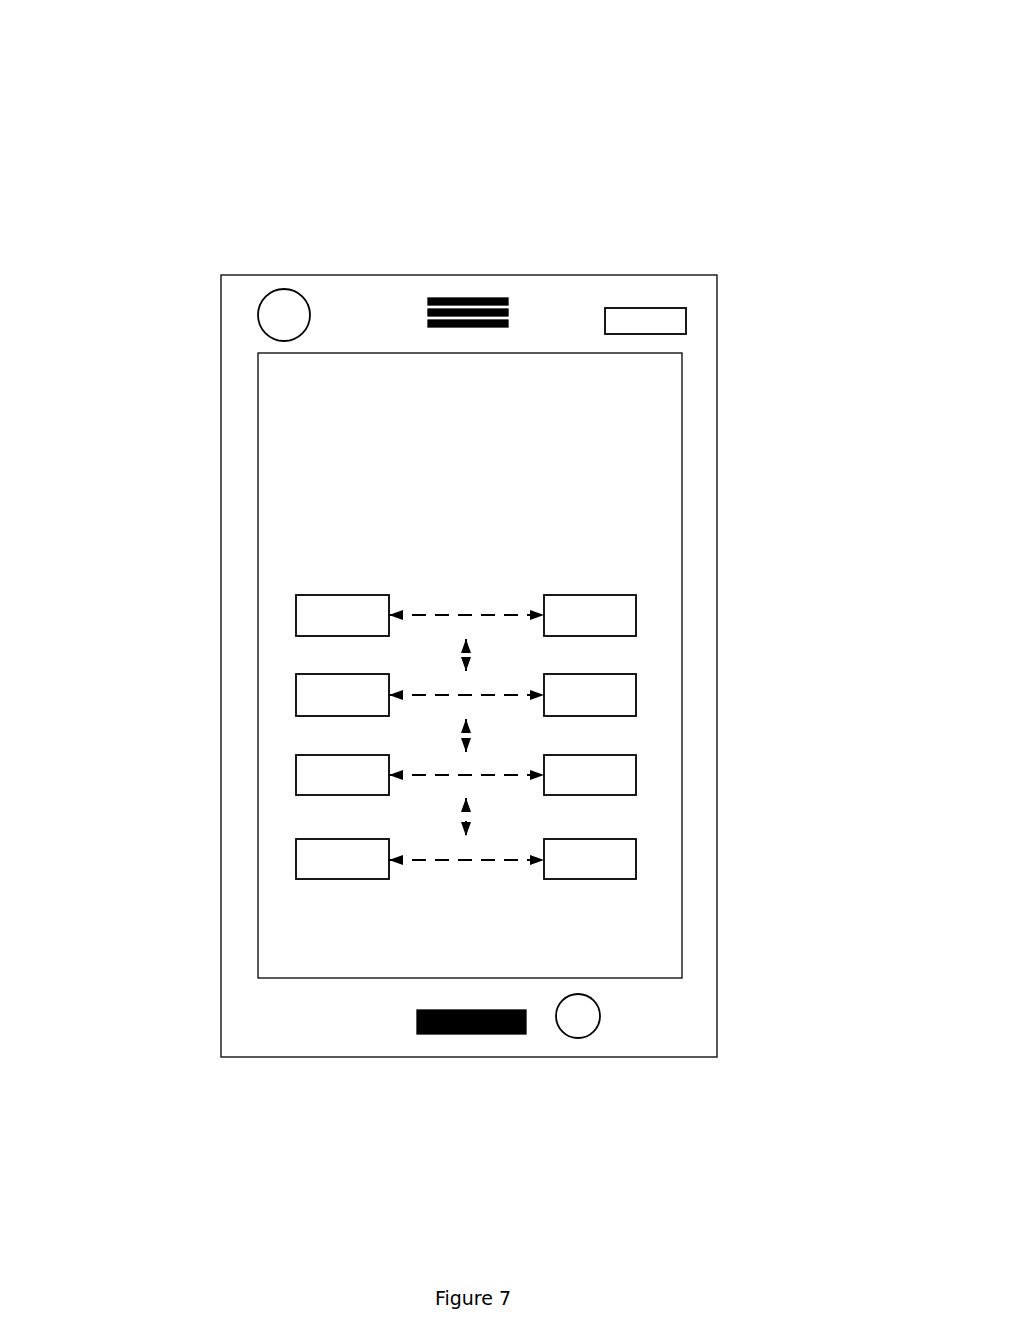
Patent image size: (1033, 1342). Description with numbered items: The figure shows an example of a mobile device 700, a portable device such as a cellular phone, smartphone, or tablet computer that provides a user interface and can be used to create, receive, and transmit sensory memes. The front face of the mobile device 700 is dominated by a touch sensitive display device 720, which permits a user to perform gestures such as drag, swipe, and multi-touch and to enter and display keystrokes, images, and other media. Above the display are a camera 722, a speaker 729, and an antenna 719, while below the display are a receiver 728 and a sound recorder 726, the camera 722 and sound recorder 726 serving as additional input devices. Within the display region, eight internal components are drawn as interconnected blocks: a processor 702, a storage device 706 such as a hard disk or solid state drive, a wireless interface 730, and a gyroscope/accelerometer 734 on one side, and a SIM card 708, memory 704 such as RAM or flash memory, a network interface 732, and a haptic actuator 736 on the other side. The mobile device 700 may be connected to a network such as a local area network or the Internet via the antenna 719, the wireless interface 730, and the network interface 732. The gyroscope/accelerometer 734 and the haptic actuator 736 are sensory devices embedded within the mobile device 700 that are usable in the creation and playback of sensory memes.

The mobile device 700 is at (162, 104).
The touch sensitive display device 720 is at (470, 665).
The camera 722 is at (256, 315).
The speaker 729 is at (427, 300).
The antenna 719 is at (662, 307).
The processor 702 is at (296, 615).
The storage device 706 is at (296, 695).
The wireless interface 730 is at (296, 775).
The gyroscope/accelerometer 734 is at (296, 860).
The subscriber identification module (SIM) card 708 is at (636, 615).
The memory 704 is at (636, 695).
The network interface 732 is at (636, 775).
The haptic actuator 736 is at (636, 860).
The receiver 728 is at (415, 1023).
The sound recorder 726 is at (603, 1019).